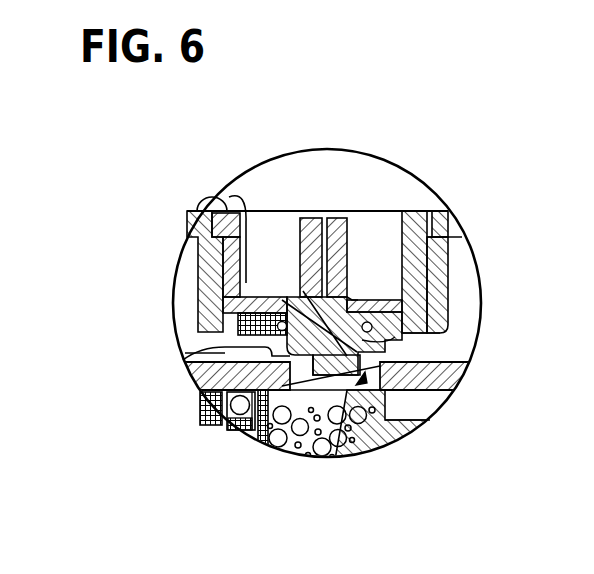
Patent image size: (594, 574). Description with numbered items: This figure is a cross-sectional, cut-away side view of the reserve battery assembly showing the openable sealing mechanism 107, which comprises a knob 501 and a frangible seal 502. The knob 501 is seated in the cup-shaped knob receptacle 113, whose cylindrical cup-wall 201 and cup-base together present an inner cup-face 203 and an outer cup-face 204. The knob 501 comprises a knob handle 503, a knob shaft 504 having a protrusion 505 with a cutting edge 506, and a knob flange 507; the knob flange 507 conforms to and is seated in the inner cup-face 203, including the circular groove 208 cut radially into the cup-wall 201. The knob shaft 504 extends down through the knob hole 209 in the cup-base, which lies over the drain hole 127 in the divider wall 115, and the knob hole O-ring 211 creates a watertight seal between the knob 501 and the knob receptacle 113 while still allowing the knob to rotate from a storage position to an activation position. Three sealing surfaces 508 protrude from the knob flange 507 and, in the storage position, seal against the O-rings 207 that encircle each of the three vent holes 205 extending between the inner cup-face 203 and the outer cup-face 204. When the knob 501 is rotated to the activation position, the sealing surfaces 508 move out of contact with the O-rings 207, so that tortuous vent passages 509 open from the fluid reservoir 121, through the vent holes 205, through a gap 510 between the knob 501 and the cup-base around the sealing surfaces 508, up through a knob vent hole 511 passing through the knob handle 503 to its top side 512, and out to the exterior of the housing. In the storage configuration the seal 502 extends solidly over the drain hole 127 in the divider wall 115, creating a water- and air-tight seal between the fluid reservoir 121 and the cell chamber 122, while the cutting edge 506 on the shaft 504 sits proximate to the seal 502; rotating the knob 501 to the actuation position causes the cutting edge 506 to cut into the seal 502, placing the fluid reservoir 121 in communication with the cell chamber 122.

The openable sealing mechanism 107 is at (302, 288).
The knob receptacle 113 is at (430, 292).
The divider wall 115 is at (447, 392).
The fluid reservoir 121 is at (450, 352).
The cell chamber 122 is at (247, 432).
The drain hole 127 is at (208, 400).
The cup-wall 201 is at (195, 273).
The inner cup-face 203 is at (198, 292).
The outer cup-face 204 is at (442, 334).
The vent holes 205 is at (225, 349).
The O-ring 207 is at (238, 197).
The circular groove 208 is at (213, 201).
The knob hole 209 is at (203, 391).
The O-ring 211 is at (218, 343).
The knob 501 is at (285, 288).
The frangible seal 502 is at (395, 438).
The knob handle 503 is at (357, 296).
The knob shaft 504 is at (325, 349).
The protrusion 505 is at (309, 380).
The cutting edge 506 is at (345, 380).
The knob flange 507 is at (408, 255).
The sealing surfaces 508 is at (196, 333).
The vent passages 509 is at (377, 294).
The gap 510 is at (430, 226).
The knob vent hole 511 is at (338, 256).
The top side 512 is at (305, 217).